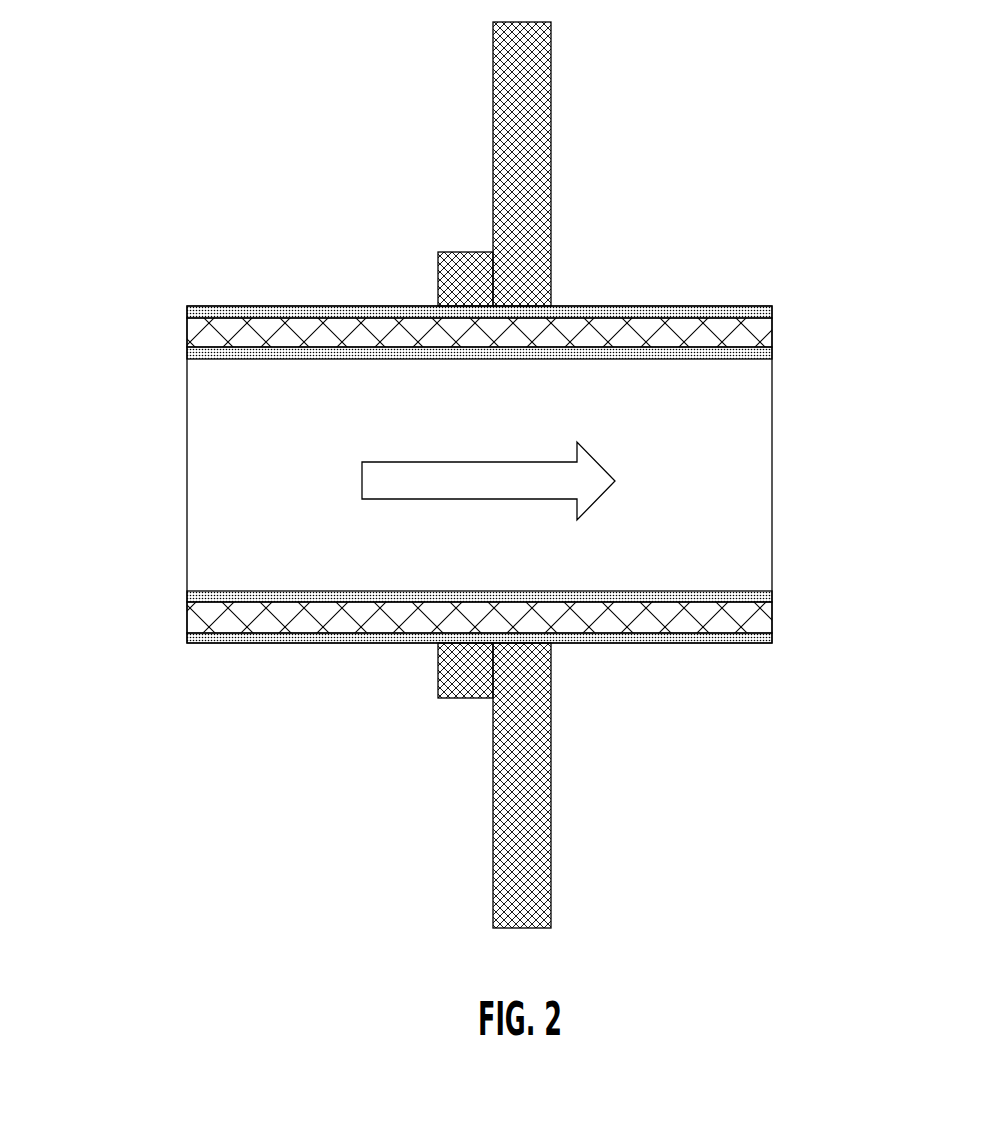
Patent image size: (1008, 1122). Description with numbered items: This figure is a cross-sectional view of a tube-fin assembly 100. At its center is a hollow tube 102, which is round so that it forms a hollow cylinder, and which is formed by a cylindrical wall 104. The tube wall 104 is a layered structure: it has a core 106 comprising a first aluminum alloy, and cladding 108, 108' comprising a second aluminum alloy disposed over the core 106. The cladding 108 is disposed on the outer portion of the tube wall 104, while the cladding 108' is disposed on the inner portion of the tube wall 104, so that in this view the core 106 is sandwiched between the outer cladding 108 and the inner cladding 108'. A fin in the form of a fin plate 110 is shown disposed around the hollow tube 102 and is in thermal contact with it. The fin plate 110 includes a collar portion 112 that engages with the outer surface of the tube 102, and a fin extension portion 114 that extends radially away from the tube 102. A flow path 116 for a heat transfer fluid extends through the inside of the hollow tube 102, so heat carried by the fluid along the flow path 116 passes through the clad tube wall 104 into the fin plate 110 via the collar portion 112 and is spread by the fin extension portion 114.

The tube-fin assembly 100 is at (461, 475).
The hollow tube 102 is at (461, 437).
The cylindrical wall 104 is at (480, 437).
The core 106 is at (762, 330).
The cladding 108 is at (503, 437).
The cladding 108' is at (532, 474).
The fin plate 110 is at (497, 475).
The collar portion 112 is at (460, 270).
The fin extension portion 114 is at (530, 105).
The flow path 116 is at (380, 469).